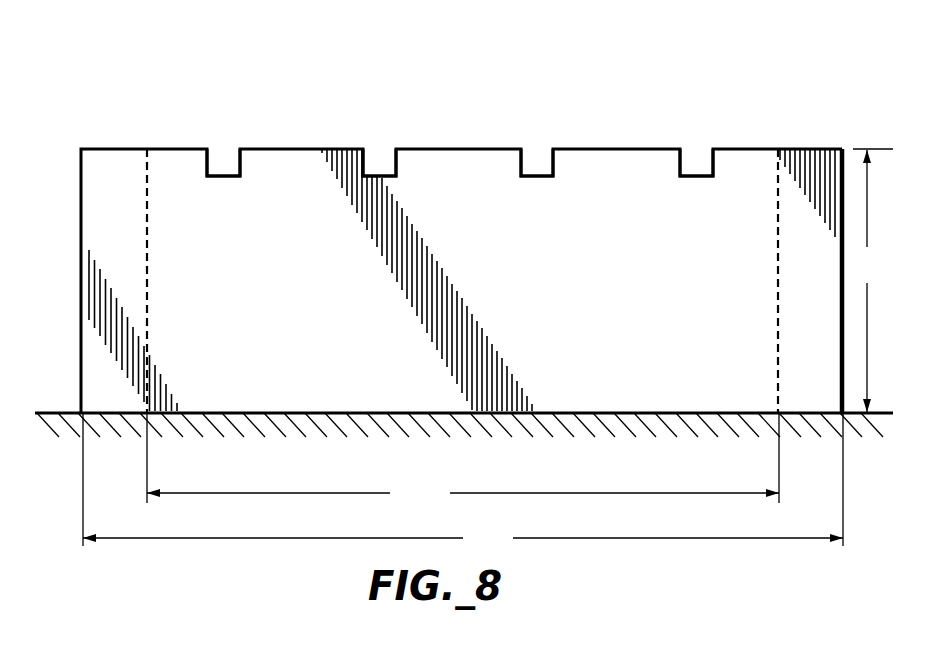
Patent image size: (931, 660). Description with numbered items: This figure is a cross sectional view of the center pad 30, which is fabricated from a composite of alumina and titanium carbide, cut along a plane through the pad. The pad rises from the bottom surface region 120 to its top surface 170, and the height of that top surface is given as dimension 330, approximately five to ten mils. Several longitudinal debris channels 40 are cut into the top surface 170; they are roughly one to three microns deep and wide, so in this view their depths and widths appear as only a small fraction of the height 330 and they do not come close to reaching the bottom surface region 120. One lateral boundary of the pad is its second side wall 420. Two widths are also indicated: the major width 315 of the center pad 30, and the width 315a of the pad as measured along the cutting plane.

The second side wall 420 is at (68, 172).
The longitudinal debris channels 40 is at (380, 160).
The top surface 170 is at (148, 137).
The bottom surface region 120 is at (48, 400).
The center pad 30 is at (657, 400).
The height dimension 330 is at (873, 280).
The width along cutting plane 315a is at (463, 458).
The major width 315 is at (463, 481).